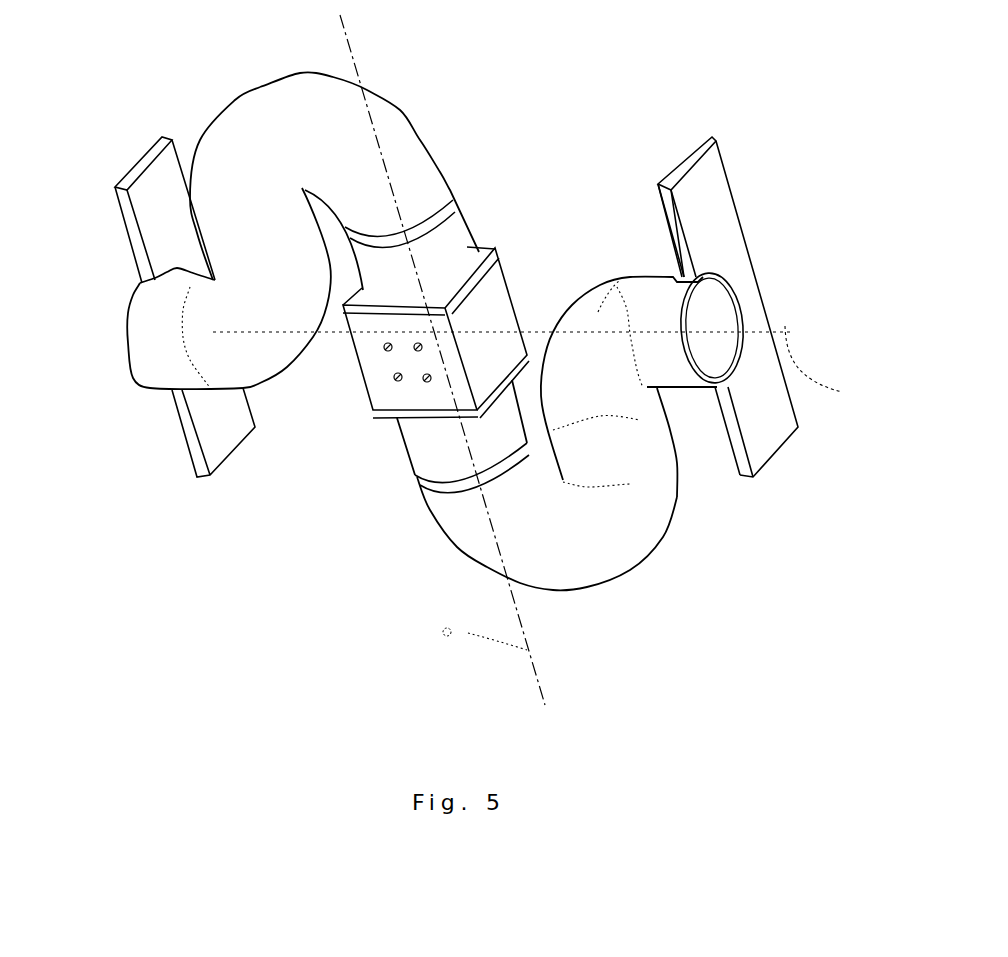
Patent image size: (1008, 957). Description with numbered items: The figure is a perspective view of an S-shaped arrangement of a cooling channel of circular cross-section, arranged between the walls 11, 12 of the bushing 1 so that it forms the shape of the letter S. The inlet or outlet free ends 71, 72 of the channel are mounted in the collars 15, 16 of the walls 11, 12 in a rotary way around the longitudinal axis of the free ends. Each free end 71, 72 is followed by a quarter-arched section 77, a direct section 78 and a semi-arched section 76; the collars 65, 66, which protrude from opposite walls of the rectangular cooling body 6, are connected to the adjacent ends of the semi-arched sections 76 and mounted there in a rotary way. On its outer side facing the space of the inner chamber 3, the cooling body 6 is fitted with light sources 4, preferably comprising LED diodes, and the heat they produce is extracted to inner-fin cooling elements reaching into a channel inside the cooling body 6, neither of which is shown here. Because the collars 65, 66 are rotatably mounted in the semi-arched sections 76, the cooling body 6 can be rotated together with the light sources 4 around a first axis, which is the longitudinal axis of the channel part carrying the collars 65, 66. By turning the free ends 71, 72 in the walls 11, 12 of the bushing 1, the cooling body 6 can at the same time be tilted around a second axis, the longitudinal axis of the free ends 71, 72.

The bushing 1 is at (725, 184).
The inner chamber 3 is at (272, 441).
The light sources 4 is at (371, 412).
The cooling body 6 is at (375, 350).
The wall of the bushing 11 is at (297, 276).
The wall of the bushing 12 is at (700, 233).
The collar 15 is at (297, 227).
The collar 16 is at (668, 245).
The collar 65 is at (407, 464).
The collar 66 is at (457, 228).
The free end 71 is at (153, 362).
The free end 72 is at (705, 281).
The semi-arched section 76 is at (337, 148).
The quarter-arched section 77 is at (287, 355).
The direct section 78 is at (192, 226).